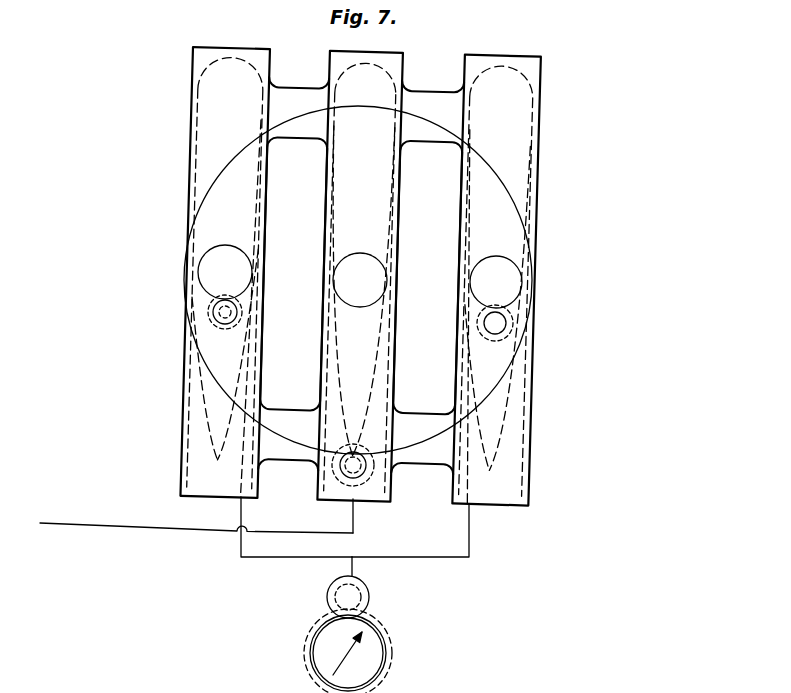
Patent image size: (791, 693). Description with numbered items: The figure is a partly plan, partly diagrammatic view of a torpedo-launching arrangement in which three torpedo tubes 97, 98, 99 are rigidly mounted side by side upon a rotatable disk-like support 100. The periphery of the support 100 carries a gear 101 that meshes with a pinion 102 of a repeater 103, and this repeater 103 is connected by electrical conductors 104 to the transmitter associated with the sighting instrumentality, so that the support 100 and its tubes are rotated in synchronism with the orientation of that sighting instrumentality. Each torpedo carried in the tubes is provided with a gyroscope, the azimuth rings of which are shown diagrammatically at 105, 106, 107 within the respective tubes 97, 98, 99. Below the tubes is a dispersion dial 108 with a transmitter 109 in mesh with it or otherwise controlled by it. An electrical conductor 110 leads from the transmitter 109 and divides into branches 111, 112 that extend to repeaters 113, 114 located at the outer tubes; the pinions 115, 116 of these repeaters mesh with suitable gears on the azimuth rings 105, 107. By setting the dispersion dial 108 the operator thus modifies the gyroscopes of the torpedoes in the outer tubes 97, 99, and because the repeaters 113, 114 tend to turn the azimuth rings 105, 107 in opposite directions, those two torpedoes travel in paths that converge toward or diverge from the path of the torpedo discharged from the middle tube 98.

The torpedo tube 97 is at (193, 66).
The torpedo tube 98 is at (330, 66).
The torpedo tube 99 is at (483, 72).
The rotatable disk-like support 100 is at (228, 203).
The gear 101 is at (196, 379).
The pinion 102 is at (390, 482).
The repeater 103 is at (333, 475).
The electrical conductors 104 is at (152, 522).
The azimuth ring 105 is at (229, 241).
The azimuth ring 106 is at (362, 248).
The azimuth ring 107 is at (495, 257).
The dispersion dial 108 is at (392, 650).
The transmitter 109 is at (370, 598).
The electrical conductor 110 is at (361, 568).
The branch 111 is at (307, 559).
The branch 112 is at (418, 565).
The repeater 113 is at (208, 310).
The repeater 114 is at (512, 325).
The pinion 115 is at (212, 321).
The pinion 116 is at (510, 337).